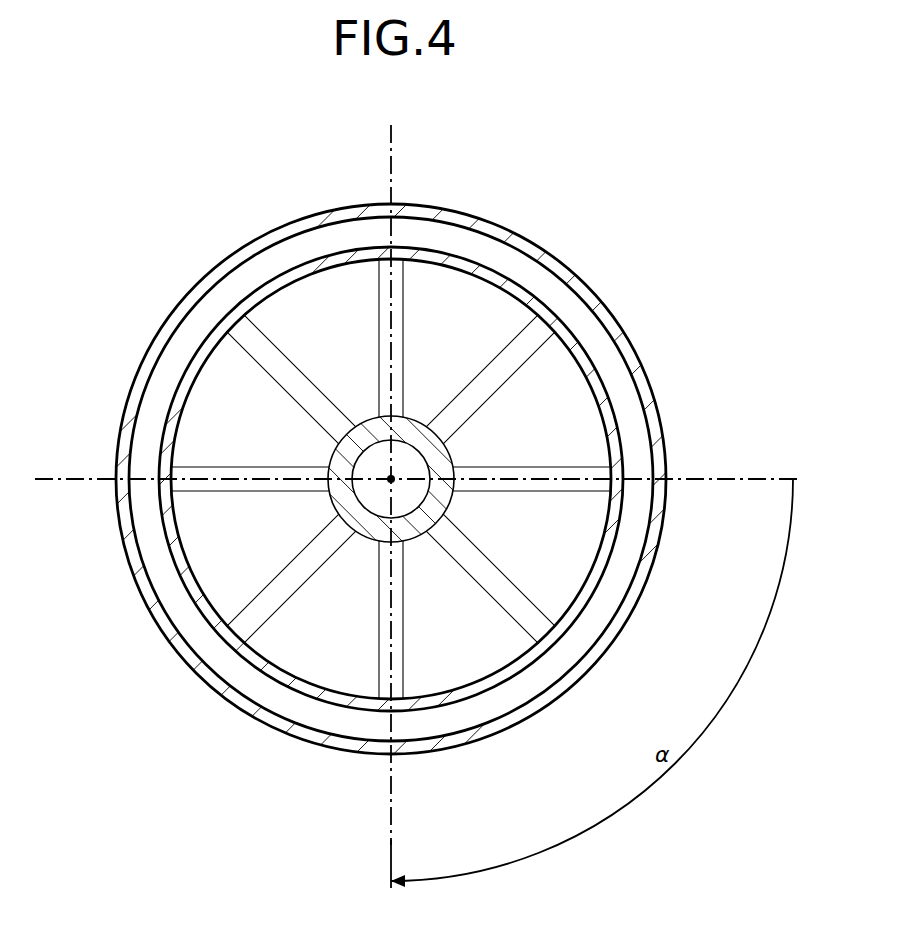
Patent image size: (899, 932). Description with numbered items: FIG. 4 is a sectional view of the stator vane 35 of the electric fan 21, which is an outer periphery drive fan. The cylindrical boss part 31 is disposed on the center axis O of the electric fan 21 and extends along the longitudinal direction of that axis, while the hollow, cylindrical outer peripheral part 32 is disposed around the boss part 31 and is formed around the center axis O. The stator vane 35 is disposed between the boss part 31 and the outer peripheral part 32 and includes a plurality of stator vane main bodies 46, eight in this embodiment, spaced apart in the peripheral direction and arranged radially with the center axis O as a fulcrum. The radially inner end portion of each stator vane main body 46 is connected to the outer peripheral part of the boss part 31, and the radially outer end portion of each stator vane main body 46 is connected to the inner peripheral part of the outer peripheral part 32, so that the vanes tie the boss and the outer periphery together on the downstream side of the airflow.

The electric fan 21 is at (391, 488).
The outer peripheral part 32 is at (288, 737).
The stator vane 35 is at (403, 320).
The boss part 31 is at (330, 508).
The stator vane main body 46 is at (397, 288).
The center axis O is at (391, 479).